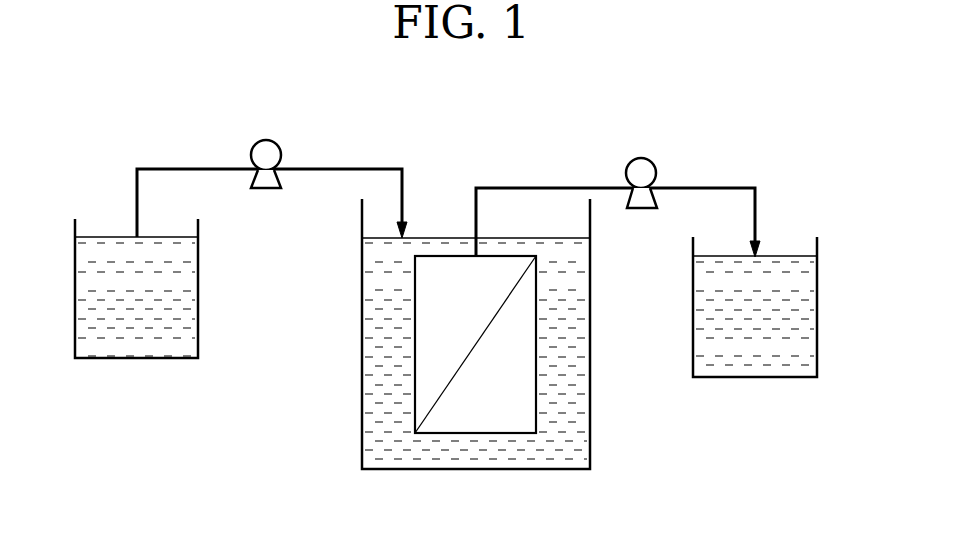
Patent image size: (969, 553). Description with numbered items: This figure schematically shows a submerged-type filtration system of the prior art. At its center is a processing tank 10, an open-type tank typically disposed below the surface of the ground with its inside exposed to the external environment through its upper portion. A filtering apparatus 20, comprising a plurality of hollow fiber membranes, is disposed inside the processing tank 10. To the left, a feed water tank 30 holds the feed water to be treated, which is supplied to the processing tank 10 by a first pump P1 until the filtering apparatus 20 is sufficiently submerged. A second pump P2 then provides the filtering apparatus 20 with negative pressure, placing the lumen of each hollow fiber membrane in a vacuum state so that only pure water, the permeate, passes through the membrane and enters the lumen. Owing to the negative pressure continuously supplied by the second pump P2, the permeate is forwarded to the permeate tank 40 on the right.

The processing tank 10 is at (590, 402).
The filtering apparatus 20 is at (536, 323).
The feed water tank 30 is at (198, 290).
The permeate tank 40 is at (817, 310).
The first pump P1 is at (281, 146).
The second pump P2 is at (656, 164).